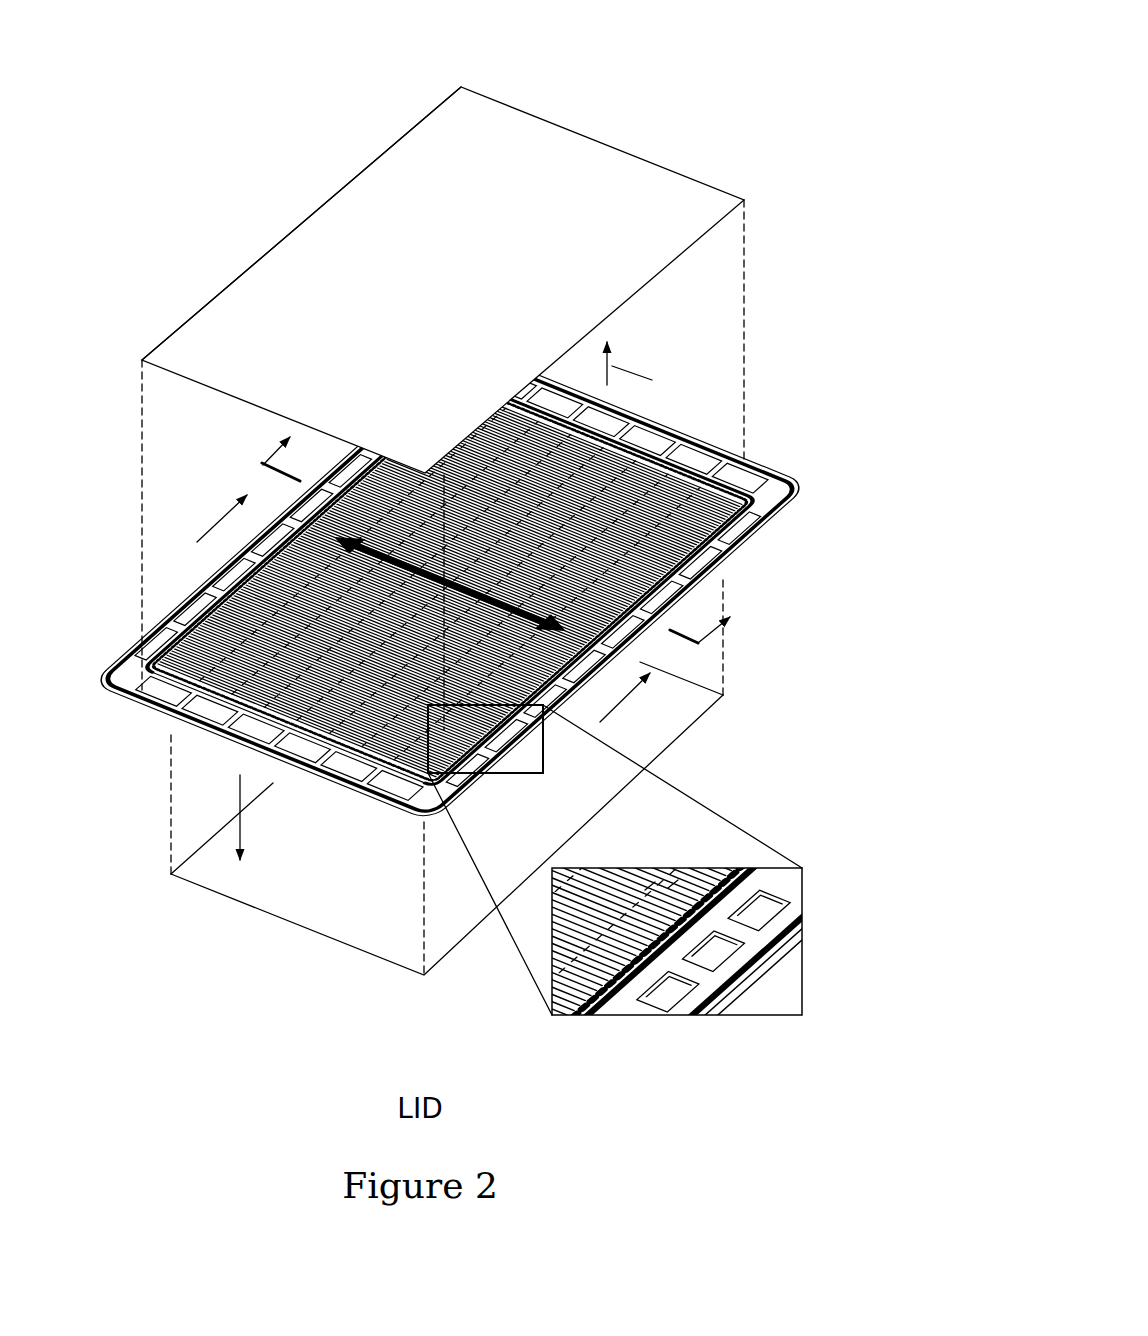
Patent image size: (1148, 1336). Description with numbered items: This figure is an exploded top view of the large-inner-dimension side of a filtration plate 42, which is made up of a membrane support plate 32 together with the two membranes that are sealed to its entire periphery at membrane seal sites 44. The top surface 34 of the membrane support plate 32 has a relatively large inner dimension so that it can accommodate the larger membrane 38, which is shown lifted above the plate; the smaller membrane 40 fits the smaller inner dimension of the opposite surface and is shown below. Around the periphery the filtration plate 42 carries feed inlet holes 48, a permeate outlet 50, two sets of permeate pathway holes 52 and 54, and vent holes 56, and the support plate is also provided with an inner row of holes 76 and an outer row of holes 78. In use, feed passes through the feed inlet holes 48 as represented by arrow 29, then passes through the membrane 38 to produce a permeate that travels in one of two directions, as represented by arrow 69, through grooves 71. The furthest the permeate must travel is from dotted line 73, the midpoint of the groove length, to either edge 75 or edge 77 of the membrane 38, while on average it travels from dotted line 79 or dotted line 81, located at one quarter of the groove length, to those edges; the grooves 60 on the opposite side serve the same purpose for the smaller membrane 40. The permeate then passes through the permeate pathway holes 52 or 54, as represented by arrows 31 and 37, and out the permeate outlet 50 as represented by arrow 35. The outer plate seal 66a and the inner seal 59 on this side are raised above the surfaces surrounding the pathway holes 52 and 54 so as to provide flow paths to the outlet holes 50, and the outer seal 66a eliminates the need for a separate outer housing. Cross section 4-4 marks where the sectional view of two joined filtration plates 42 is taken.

The cross section 4- 4 is at (504, 534).
The arrow 29 is at (240, 837).
The arrow 31 is at (634, 700).
The membrane support plate 32 is at (752, 445).
The top surface 34 is at (772, 485).
The arrow 35 is at (632, 372).
The arrow 37 is at (213, 516).
The membrane 38 is at (563, 177).
The membrane 40 is at (457, 913).
The filtration plate 42 is at (770, 125).
The membrane seal site 44 is at (707, 487).
The feed inlet holes 48 is at (397, 797).
The permeate outlet 50 is at (665, 355).
The permeate pathway holes 52 is at (470, 778).
The permeate pathway holes 54 is at (147, 663).
The vent holes 56 is at (598, 418).
The seal 59 is at (632, 975).
The grooves 60 is at (598, 905).
The outer plate seal 66a is at (760, 968).
The arrow 69 is at (567, 590).
The grooves 71 is at (585, 550).
The dotted line 73 is at (537, 507).
The edge 75 is at (268, 250).
The inner row of holes 76 is at (650, 885).
The edge 77 is at (617, 348).
The outer row of holes 78 is at (673, 883).
The dotted line 79 is at (410, 740).
The dotted line 81 is at (300, 612).